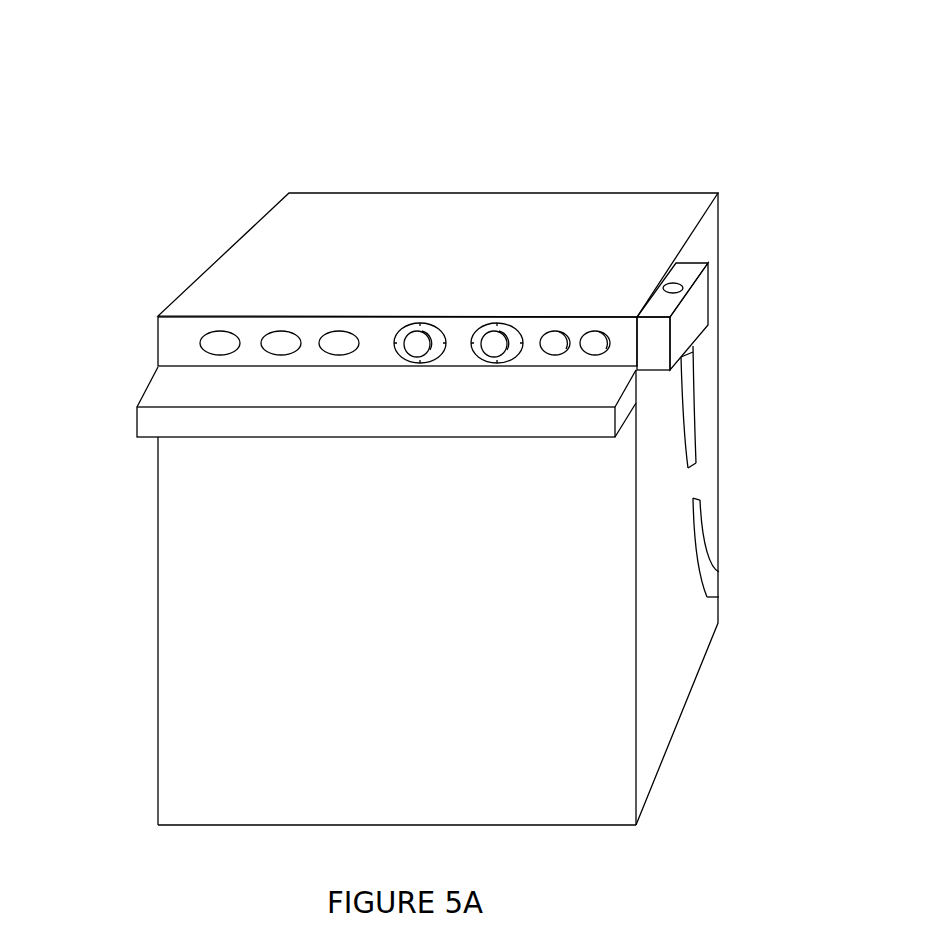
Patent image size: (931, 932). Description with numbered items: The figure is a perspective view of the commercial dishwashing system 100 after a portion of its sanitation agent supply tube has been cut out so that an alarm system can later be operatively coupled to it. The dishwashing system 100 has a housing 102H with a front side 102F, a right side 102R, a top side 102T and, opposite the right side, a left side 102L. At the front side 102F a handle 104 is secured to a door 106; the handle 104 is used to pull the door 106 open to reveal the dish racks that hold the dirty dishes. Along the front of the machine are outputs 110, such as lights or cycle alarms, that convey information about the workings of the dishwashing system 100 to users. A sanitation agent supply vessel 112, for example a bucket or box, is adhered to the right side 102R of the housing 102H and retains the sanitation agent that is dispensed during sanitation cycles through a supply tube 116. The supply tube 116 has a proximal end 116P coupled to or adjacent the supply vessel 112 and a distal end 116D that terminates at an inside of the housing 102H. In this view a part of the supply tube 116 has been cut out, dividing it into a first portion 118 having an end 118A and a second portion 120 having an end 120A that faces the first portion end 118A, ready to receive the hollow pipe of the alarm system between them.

The dishwashing system 100 is at (271, 77).
The top side 102T is at (303, 238).
The front side 102F is at (193, 600).
The left side 102L is at (137, 751).
The housing 102H is at (227, 802).
The right side 102R is at (665, 670).
The handle 104 is at (145, 427).
The door 106 is at (192, 525).
The outputs 110 is at (260, 333).
The sanitation agent supply vessel 112 is at (693, 315).
The supply tube 116 is at (711, 388).
The proximal end 116P is at (693, 352).
The distal end 116D is at (713, 580).
The first portion 118 is at (700, 418).
The first portion end 118A is at (693, 462).
The second portion 120 is at (710, 530).
The second portion end 120A is at (700, 503).